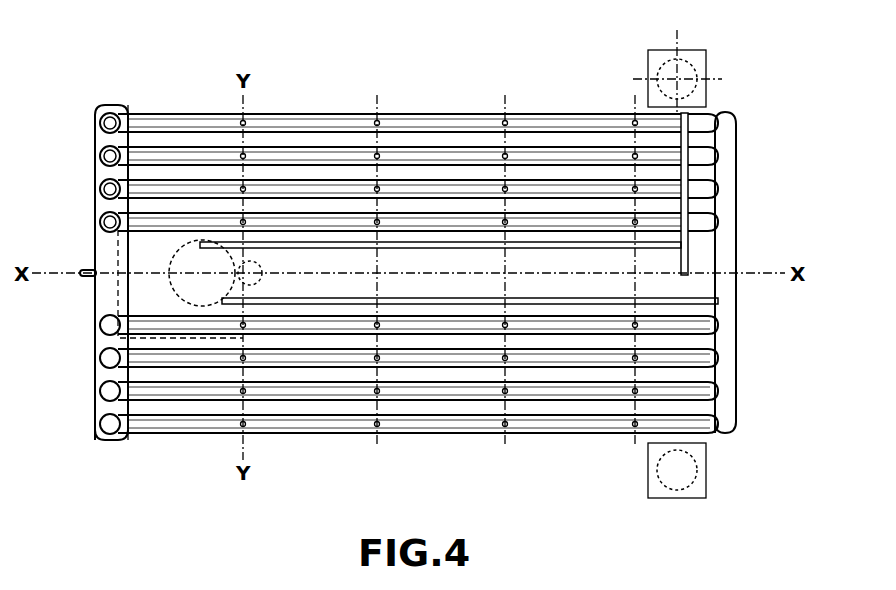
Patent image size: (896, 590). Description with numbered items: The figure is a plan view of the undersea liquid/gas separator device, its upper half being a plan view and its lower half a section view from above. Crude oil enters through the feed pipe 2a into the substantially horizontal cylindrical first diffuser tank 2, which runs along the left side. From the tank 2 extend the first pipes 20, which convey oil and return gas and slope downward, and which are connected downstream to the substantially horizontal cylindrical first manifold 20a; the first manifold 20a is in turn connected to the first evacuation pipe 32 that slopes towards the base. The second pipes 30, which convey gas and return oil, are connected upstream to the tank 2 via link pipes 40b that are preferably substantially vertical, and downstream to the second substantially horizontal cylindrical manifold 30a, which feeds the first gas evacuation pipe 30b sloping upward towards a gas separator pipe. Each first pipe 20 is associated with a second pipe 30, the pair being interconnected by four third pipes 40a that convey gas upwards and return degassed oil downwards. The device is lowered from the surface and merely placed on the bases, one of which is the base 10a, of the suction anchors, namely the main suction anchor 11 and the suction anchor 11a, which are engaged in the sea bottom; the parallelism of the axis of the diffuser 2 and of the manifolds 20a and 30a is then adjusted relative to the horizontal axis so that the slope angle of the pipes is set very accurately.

The first diffuser tank 2 is at (95, 298).
The feed pipe 2a is at (88, 268).
The base 10a is at (698, 50).
The main suction anchor 11 is at (175, 290).
The suction anchor 11a is at (656, 68).
The first pipes 20 is at (318, 113).
The first manifold 20a is at (736, 158).
The second pipes 30 is at (445, 122).
The second manifold 30a is at (686, 262).
The first gas evacuation pipe 30b is at (528, 248).
The first evacuation pipe 32 is at (408, 297).
The third pipes 40a is at (380, 424).
The link pipes 40b is at (101, 126).